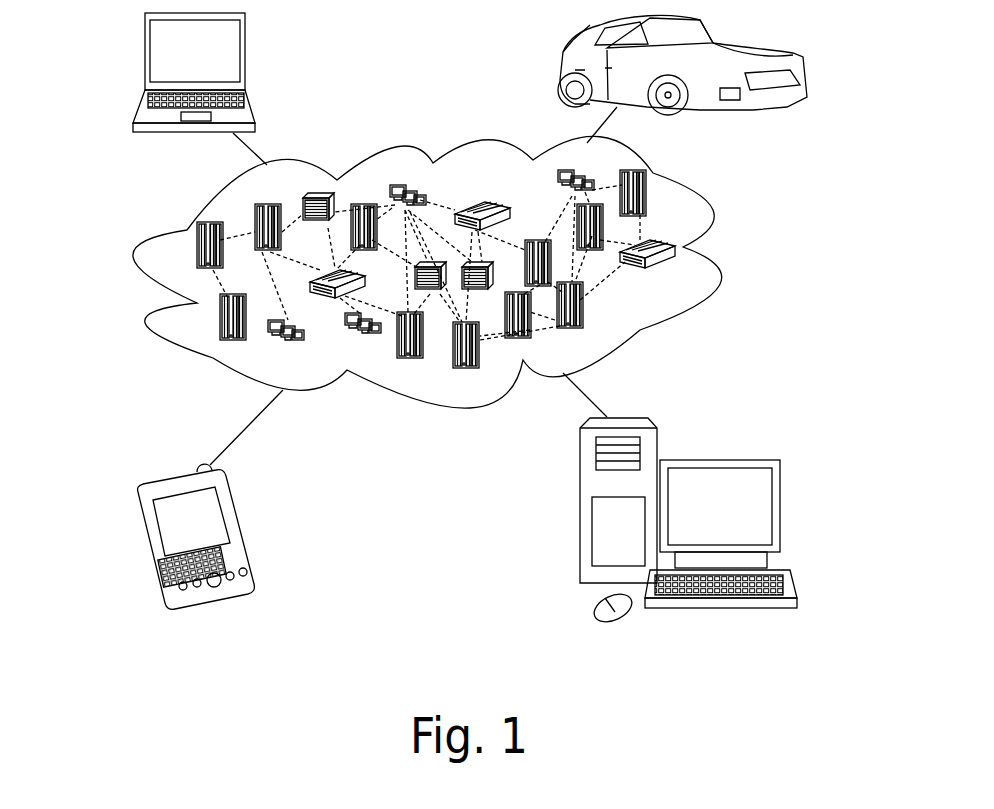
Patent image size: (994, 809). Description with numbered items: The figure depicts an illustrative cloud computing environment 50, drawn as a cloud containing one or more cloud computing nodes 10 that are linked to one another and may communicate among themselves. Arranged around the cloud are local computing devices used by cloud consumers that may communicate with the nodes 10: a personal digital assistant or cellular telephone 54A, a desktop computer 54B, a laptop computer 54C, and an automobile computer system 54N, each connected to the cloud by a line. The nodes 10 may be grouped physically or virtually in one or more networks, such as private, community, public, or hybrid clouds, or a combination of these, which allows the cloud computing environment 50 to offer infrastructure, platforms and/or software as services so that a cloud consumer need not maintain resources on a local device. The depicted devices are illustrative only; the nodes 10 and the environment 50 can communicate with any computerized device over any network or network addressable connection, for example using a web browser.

The cloud computing nodes 10 is at (676, 275).
The cloud computing environment 50 is at (710, 212).
The personal digital assistant (PDA) or cellular telephone 54A is at (150, 557).
The desktop computer 54B is at (787, 497).
The laptop computer 54C is at (145, 42).
The automobile computer system 54N is at (806, 62).